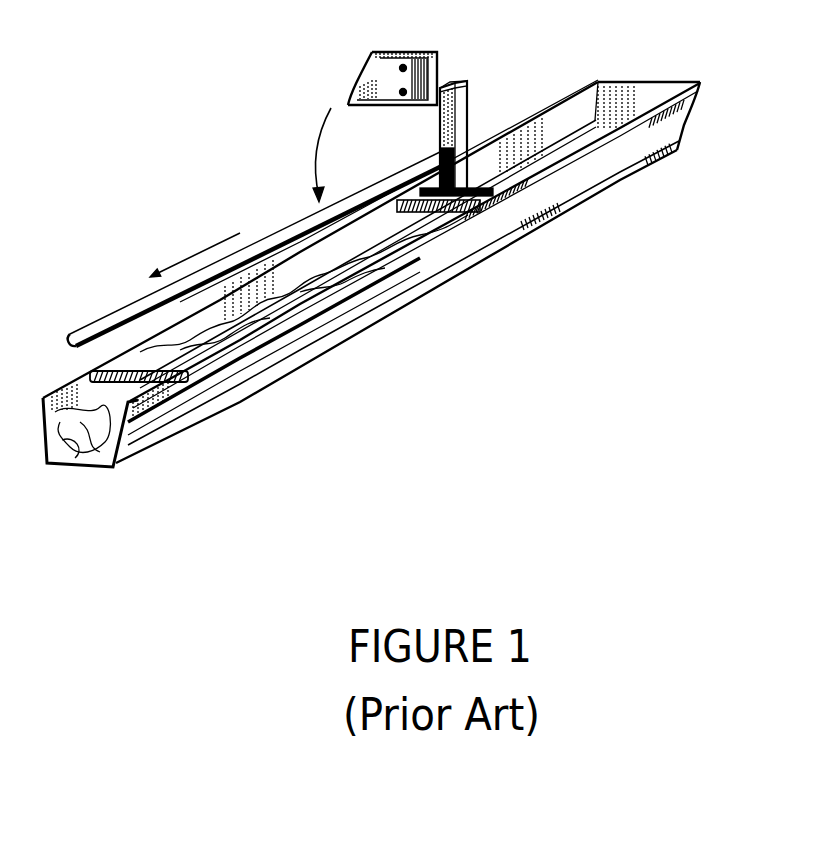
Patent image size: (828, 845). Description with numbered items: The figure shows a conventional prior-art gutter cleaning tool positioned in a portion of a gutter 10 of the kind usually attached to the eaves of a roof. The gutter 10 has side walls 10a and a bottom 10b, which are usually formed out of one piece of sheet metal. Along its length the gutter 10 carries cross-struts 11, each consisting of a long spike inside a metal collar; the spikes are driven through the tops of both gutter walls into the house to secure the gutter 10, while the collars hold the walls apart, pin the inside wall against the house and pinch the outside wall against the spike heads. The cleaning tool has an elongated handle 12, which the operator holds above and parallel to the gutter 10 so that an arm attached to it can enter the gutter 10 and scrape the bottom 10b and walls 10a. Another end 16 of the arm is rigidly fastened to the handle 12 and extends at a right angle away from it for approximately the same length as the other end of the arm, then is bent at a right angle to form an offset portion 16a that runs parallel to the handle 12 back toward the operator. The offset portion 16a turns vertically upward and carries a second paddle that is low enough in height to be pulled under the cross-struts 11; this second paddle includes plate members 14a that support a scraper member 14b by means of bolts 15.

The gutter 10 is at (570, 192).
The side walls 10a is at (160, 423).
The bottom 10b is at (80, 468).
The cross-struts 11 is at (130, 370).
The elongated handle 12 is at (424, 167).
The plate members 14a is at (438, 64).
The scraper member 14b is at (357, 75).
The bolts 15 is at (404, 66).
The another end of the arm 16 is at (467, 114).
The offset portion 16a is at (468, 82).